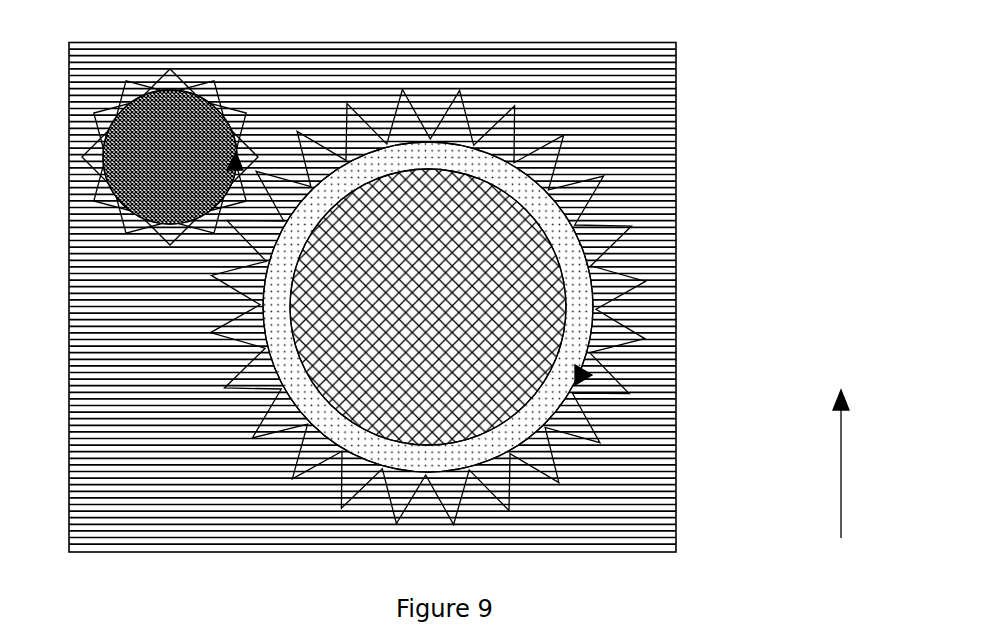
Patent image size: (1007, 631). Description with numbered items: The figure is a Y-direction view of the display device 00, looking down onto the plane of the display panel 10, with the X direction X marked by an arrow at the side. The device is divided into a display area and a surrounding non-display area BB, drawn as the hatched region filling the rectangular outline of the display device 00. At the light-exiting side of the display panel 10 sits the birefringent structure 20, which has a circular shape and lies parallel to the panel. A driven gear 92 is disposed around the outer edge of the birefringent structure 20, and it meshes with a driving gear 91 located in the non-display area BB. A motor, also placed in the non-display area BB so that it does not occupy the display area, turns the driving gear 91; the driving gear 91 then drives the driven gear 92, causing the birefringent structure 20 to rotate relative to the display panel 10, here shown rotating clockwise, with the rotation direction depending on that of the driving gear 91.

The display device 00 is at (376, 278).
The non-display area BB is at (622, 125).
The driving gear 91 is at (122, 220).
The driven gear 92 is at (593, 235).
The birefringent structure 20 is at (600, 327).
The display panel 10 is at (573, 432).
The X direction X is at (841, 448).